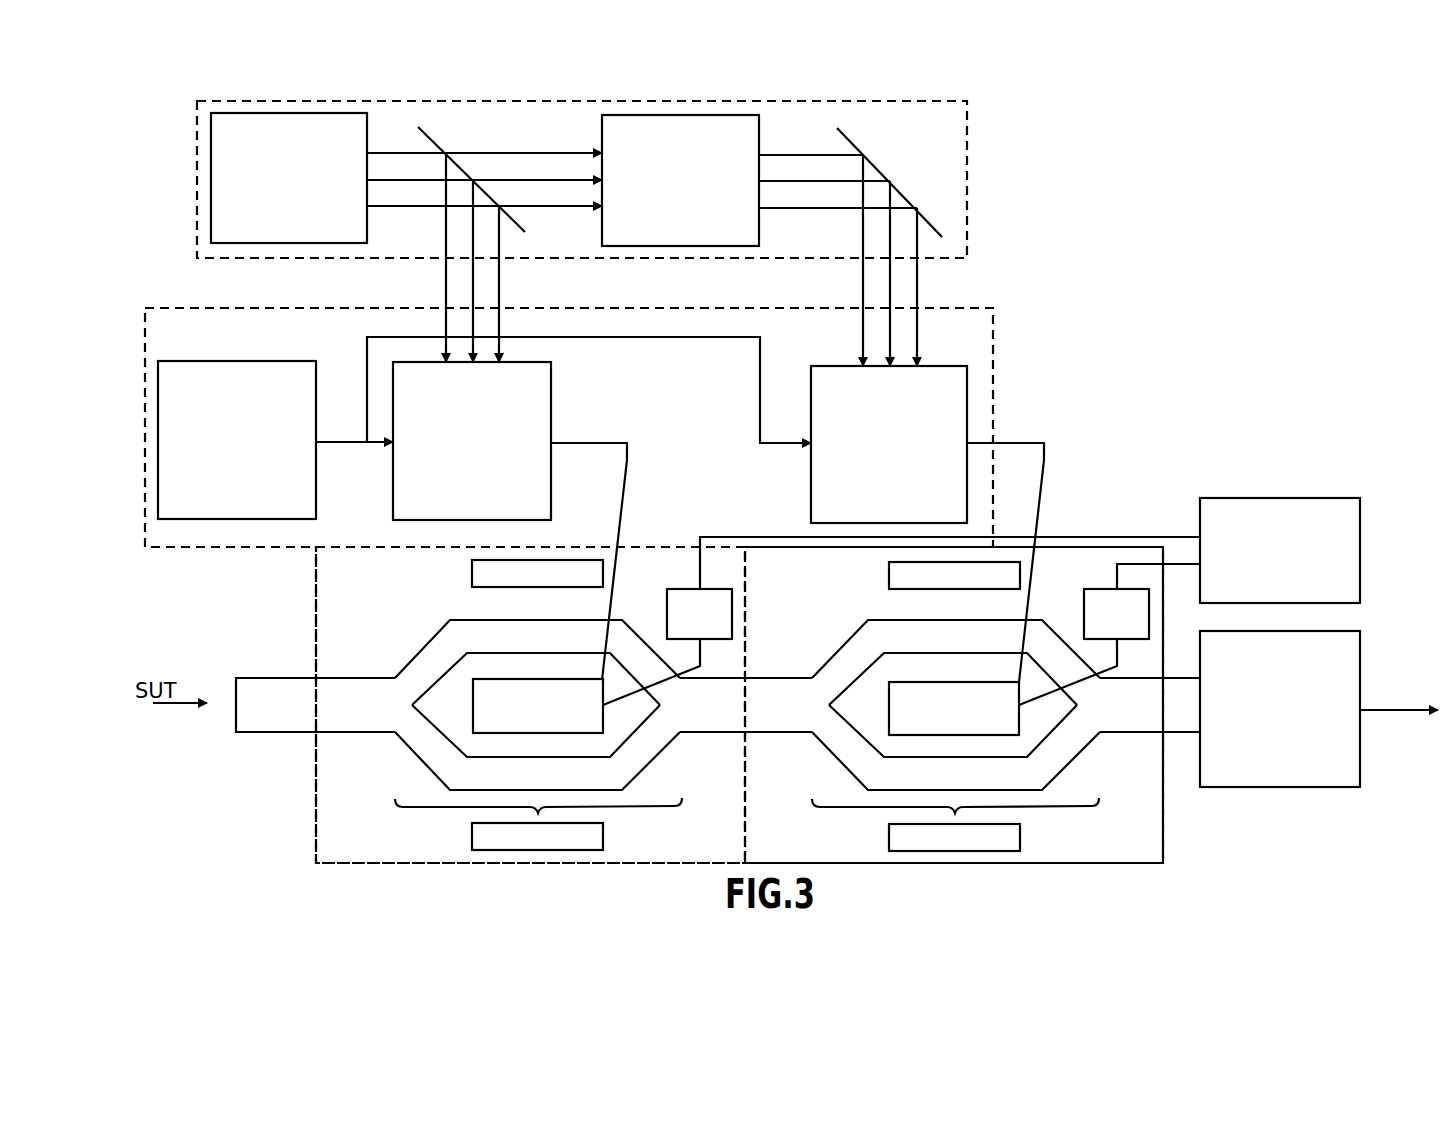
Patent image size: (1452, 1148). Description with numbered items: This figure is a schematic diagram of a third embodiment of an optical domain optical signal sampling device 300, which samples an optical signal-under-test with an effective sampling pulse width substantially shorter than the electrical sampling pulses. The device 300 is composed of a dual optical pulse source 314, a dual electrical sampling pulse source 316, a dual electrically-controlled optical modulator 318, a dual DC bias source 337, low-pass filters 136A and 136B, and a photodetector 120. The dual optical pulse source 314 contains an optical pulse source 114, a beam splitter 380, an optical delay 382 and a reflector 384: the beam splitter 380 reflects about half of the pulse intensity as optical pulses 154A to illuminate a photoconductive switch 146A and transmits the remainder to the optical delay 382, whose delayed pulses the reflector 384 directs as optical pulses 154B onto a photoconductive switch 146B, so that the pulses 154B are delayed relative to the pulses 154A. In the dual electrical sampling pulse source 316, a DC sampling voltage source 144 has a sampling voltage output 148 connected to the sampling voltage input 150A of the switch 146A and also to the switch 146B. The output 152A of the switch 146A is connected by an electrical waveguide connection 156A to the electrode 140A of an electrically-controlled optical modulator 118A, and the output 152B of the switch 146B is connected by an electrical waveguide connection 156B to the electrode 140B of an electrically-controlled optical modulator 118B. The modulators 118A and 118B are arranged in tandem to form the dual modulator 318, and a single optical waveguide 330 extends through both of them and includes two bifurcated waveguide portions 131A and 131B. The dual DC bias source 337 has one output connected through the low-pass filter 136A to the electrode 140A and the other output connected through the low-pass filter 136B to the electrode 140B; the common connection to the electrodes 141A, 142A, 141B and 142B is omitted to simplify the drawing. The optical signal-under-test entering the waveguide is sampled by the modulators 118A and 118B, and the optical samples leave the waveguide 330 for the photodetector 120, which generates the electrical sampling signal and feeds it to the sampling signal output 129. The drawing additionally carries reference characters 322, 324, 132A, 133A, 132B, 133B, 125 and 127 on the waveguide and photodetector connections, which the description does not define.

The optical domain optical signal sampling device 300 is at (1087, 253).
The dual optical pulse source 314 is at (197, 163).
The optical pulse source 114 is at (367, 231).
The beam splitter 380 is at (434, 134).
The optical delay 382 is at (759, 136).
The reflector 384 is at (851, 142).
The optical pulses 154A is at (505, 273).
The optical pulses 154B is at (920, 273).
The dual electrical sampling pulse source 316 is at (993, 334).
The DC sampling voltage source 144 is at (240, 361).
The sampling voltage output 148 is at (325, 442).
The sampling voltage input 150A is at (390, 446).
The photoconductive switch 146A is at (551, 379).
The photoconductive switch 146B is at (811, 470).
The output 152A is at (556, 439).
The output 152B is at (978, 440).
The electrical waveguide connection 156A is at (627, 457).
The electrical waveguide connection 156B is at (1044, 457).
The dual electrically-controlled optical modulator 318 is at (638, 548).
The electrically-controlled optical modulator 118A is at (733, 851).
The electrically-controlled optical modulator 118B is at (1151, 854).
The input optical waveguide 322 is at (234, 703).
The optical waveguide 330 is at (334, 700).
The upper waveguide arm 132A is at (425, 648).
The lower waveguide arm 133A is at (425, 762).
The upper waveguide arm 132B is at (840, 650).
The lower waveguide arm 133B is at (840, 764).
The output optical waveguide 324 is at (1163, 708).
The electrode 141A is at (472, 573).
The electrode 142A is at (472, 836).
The electrode 140A is at (518, 704).
The electrode 141B is at (890, 573).
The electrode 142B is at (889, 838).
The electrode 140B is at (930, 704).
The bifurcated waveguide portion 131A is at (540, 813).
The bifurcated waveguide portion 131B is at (957, 813).
The low-pass filter 136A is at (667, 612).
The low-pass filter 136B is at (1084, 612).
The dual DC bias source 337 is at (1302, 498).
The photodetector 120 is at (1286, 787).
The photodetector optical input 125 is at (1200, 705).
The photodetector electrical output 127 is at (1360, 708).
The sampling signal output 129 is at (1432, 714).